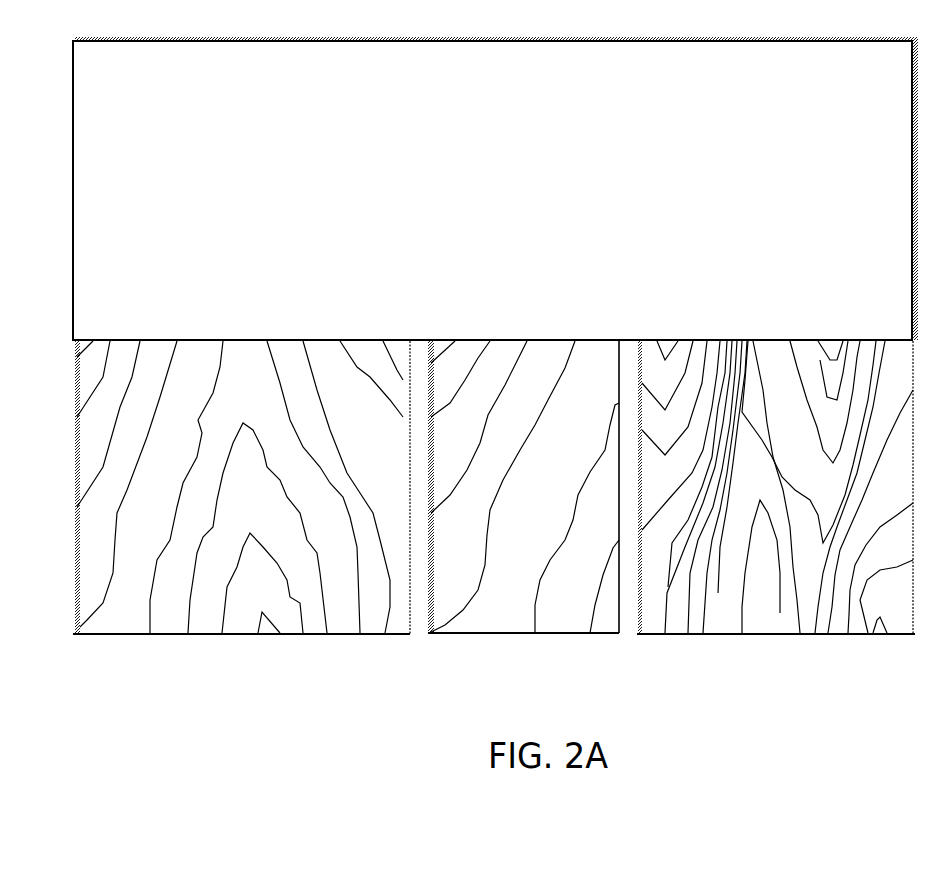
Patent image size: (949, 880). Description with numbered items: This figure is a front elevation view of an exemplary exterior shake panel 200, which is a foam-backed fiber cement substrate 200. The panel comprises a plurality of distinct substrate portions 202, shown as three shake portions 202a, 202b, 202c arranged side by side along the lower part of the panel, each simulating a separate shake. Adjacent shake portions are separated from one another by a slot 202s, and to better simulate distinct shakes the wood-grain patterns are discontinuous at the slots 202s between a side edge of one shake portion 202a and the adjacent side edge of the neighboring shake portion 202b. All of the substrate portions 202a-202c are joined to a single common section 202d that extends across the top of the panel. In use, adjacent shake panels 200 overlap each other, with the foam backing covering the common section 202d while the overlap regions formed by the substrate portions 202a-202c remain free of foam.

The exterior shake panel 200 is at (158, 688).
The substrate portions 202 is at (677, 648).
The first substrate portion 202a is at (165, 640).
The second substrate portion 202b is at (515, 634).
The third substrate portion 202c is at (728, 637).
The common section 202d is at (520, 211).
The slot 202s is at (418, 607).